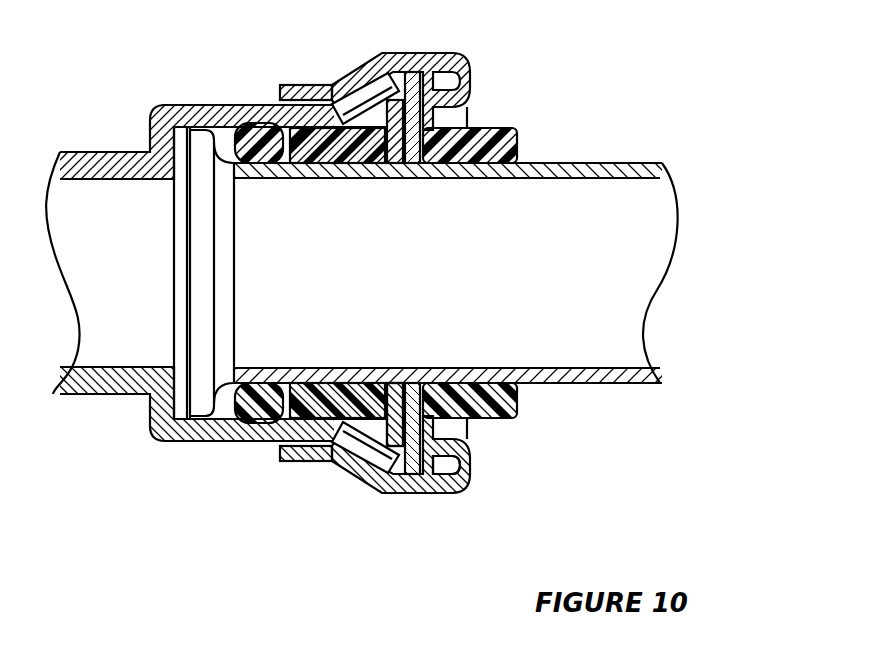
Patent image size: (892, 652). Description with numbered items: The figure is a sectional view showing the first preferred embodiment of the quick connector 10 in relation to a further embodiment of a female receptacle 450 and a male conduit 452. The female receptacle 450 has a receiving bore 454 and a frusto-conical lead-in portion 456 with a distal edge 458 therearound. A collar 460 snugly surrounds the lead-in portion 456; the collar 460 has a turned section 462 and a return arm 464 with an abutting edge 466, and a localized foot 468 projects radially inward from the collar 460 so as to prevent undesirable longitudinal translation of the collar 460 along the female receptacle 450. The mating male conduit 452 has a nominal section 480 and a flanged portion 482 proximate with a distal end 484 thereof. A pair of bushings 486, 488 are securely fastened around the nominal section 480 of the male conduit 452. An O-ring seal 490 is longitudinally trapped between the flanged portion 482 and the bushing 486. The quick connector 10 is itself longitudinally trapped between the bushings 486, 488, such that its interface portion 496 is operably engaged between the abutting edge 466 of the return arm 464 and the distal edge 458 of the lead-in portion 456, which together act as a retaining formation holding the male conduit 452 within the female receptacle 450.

The quick connector 10 is at (446, 283).
The female receptacle 450 is at (192, 432).
The male conduit 452 is at (627, 226).
The receiving bore 454 is at (233, 127).
The frusto-conical lead-in portion 456 is at (333, 117).
The distal edge 458 is at (406, 63).
The collar 460 is at (350, 470).
The turned section 462 is at (468, 458).
The return arm 464 is at (468, 460).
The abutting edge 466 is at (422, 483).
The localized foot 468 is at (400, 488).
The nominal section 480 is at (502, 170).
The flanged portion 482 is at (200, 133).
The distal end 484 is at (183, 137).
The bushing 486 is at (293, 87).
The bushing 488 is at (507, 134).
The O-ring seal 490 is at (232, 132).
The interface portion 496 is at (420, 100).